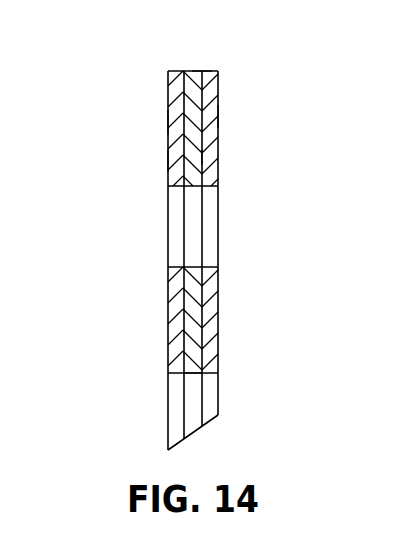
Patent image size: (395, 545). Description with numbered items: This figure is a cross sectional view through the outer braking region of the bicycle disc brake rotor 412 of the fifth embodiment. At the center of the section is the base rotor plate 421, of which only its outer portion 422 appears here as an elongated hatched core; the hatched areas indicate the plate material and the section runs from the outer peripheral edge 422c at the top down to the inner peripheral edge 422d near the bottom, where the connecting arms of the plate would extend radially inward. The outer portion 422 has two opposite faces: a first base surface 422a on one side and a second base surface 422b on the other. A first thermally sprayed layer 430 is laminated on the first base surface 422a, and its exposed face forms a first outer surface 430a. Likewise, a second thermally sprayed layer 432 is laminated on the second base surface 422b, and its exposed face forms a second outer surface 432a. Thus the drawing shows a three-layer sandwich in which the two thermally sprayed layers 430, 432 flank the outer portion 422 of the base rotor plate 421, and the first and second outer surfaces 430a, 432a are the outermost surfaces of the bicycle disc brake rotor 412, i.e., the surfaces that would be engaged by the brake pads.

The bicycle disc brake rotor 412 is at (127, 94).
The base rotor plate 421 is at (187, 70).
The outer portion 422 is at (202, 314).
The first base surface 422a is at (170, 160).
The second base surface 422b is at (207, 156).
The outer peripheral edge 422c is at (199, 71).
The inner peripheral edge 422d is at (189, 373).
The first thermally sprayed layer 430 is at (165, 97).
The first outer surface 430a is at (166, 122).
The second thermally sprayed layer 432 is at (218, 83).
The second outer surface 432a is at (217, 116).